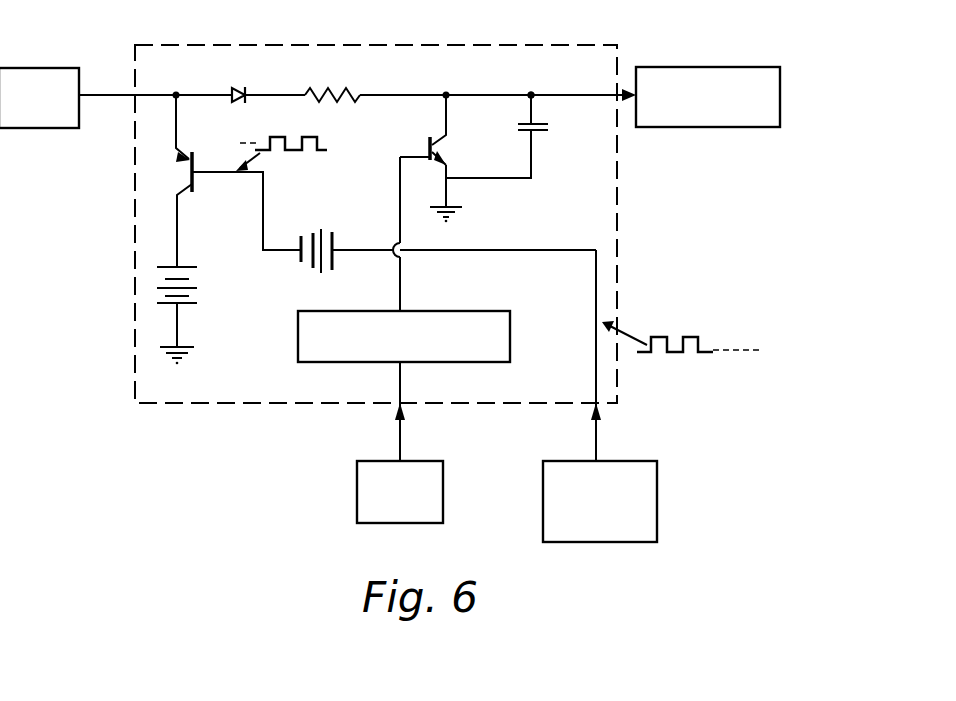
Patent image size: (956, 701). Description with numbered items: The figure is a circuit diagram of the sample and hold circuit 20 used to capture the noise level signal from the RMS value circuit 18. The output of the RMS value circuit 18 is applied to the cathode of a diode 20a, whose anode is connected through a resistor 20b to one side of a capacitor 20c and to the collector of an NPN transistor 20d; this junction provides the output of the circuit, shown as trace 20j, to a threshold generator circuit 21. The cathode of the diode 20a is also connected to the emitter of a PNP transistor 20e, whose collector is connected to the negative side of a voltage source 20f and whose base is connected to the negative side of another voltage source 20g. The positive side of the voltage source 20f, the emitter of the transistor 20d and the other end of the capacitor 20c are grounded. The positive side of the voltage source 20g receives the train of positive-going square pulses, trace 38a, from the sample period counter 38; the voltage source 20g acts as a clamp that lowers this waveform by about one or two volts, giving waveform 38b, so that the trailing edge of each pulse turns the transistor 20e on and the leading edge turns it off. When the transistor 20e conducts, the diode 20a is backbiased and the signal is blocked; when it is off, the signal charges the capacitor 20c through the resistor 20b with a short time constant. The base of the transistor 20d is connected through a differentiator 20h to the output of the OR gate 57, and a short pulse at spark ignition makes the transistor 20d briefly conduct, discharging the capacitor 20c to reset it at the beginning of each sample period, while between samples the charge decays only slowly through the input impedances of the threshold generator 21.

The RMS value circuit 18 is at (50, 68).
The sample and hold circuit 20 is at (608, 213).
The diode 20a is at (236, 90).
The resistor 20b is at (343, 88).
The capacitor 20c is at (540, 132).
The NPN transistor 20d is at (428, 147).
The PNP transistor 20e is at (183, 173).
The voltage source 20f is at (187, 265).
The voltage source 20g is at (305, 266).
The differentiator 20h is at (315, 353).
The trace 20j is at (573, 91).
The threshold generator circuit 21 is at (727, 118).
The sample period counter 38 is at (657, 472).
The trace 38a is at (655, 336).
The waveform 38b is at (313, 138).
The OR gate 57 is at (357, 500).